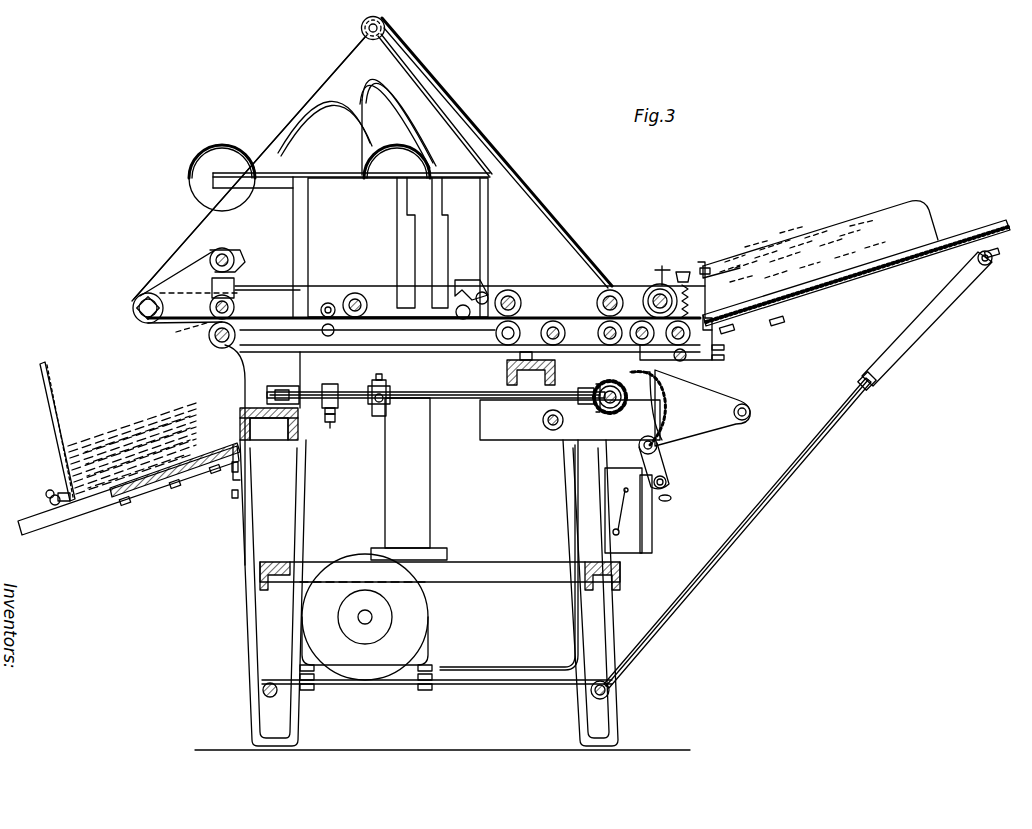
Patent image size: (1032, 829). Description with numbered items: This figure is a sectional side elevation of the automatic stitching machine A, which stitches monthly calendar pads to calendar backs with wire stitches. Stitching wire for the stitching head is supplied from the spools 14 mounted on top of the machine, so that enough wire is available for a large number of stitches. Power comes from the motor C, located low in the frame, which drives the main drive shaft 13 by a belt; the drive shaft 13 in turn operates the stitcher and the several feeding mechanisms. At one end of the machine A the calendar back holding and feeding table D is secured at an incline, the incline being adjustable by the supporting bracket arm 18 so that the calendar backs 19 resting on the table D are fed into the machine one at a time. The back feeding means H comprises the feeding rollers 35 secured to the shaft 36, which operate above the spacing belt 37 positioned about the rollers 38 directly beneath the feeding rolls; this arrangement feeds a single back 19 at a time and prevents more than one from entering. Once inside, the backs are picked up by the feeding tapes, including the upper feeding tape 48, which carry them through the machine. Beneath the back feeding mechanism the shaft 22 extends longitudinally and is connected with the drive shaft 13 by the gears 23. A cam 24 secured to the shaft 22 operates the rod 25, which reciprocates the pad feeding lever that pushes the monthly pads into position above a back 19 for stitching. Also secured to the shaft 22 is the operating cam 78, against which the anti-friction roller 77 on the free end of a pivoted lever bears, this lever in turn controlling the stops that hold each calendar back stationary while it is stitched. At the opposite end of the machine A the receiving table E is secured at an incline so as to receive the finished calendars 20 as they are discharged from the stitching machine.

The spools 14 is at (215, 178).
The feeding tape 48 is at (528, 184).
The automatic stitching machine A is at (527, 240).
The back feeding means H is at (678, 292).
The feeding rollers 35 is at (650, 292).
The shaft 36 is at (665, 290).
The calendar backs 19 is at (780, 250).
The calendar back holding and feeding table D is at (948, 232).
The spacing belt 37 is at (720, 328).
The rollers 38 is at (665, 338).
The drive shaft 13 is at (607, 384).
The gears 23 is at (602, 405).
The rod 25 is at (390, 390).
The operating cam 78 is at (333, 385).
The anti-friction roller 77 is at (330, 428).
The cam 24 is at (374, 414).
The shaft 22 is at (462, 402).
The supporting bracket arm 18 is at (815, 462).
The motor C is at (428, 632).
The receiving table E is at (120, 500).
The finished calendars 20 is at (97, 440).